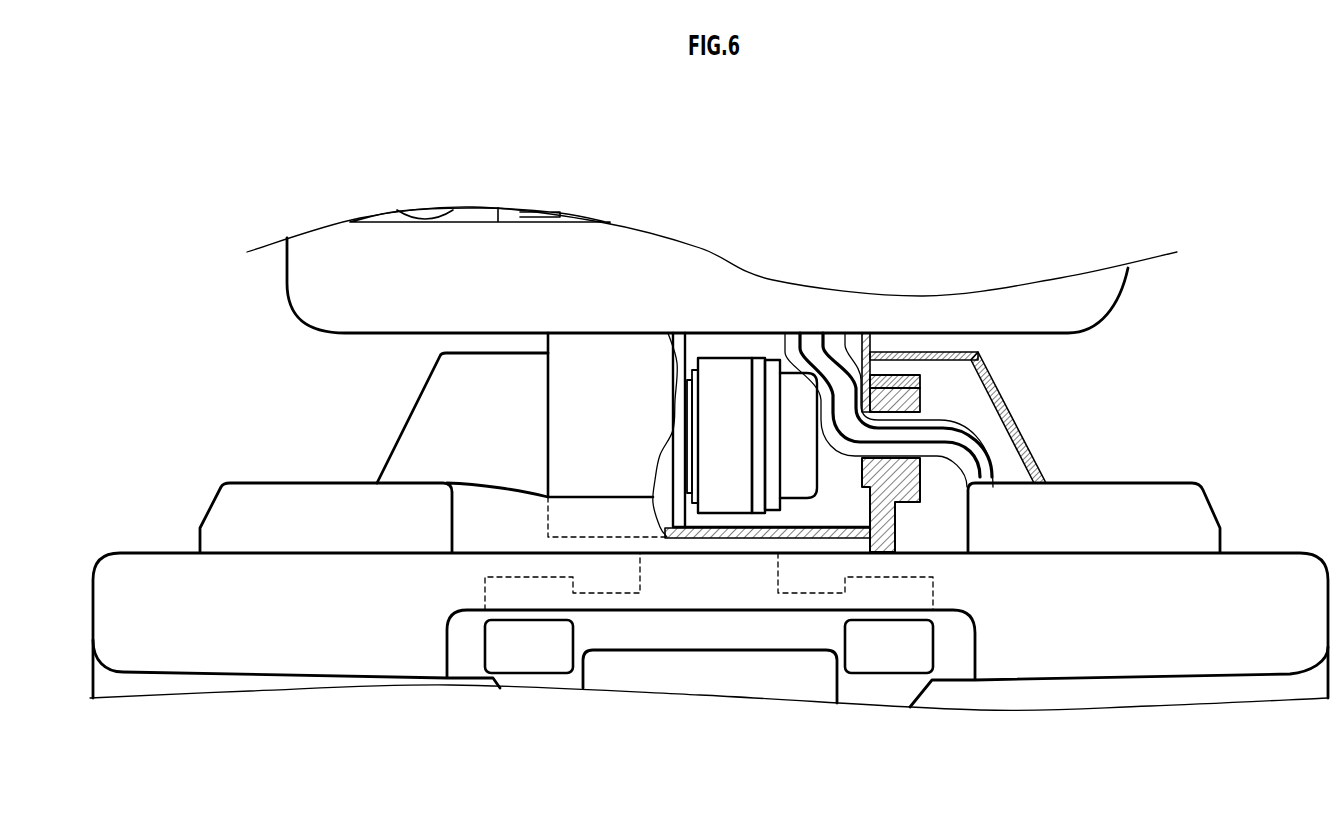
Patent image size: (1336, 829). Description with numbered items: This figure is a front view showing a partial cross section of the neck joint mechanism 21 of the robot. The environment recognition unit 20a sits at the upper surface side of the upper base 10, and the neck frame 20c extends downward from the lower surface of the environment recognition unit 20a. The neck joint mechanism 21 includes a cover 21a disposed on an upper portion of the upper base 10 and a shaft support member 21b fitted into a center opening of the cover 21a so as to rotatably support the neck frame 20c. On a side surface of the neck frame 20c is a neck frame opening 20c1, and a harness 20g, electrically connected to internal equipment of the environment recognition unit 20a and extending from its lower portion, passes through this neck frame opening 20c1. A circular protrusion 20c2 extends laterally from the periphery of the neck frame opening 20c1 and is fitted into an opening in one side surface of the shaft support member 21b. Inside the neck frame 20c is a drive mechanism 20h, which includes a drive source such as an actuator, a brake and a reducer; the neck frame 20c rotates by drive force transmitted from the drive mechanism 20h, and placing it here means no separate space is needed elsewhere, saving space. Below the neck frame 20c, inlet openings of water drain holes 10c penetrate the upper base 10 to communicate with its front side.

The upper base 10 is at (1285, 563).
The water drain holes 10c is at (545, 670).
The environment recognition unit 20a is at (315, 294).
The neck frame 20c is at (590, 373).
The neck frame opening 20c1 is at (890, 420).
The circular protrusion 20c2 is at (923, 400).
The harness 20g is at (985, 468).
The drive mechanism 20h is at (803, 507).
The neck joint mechanism 21 is at (384, 389).
The cover 21a is at (988, 363).
The shaft support member 21b is at (923, 375).